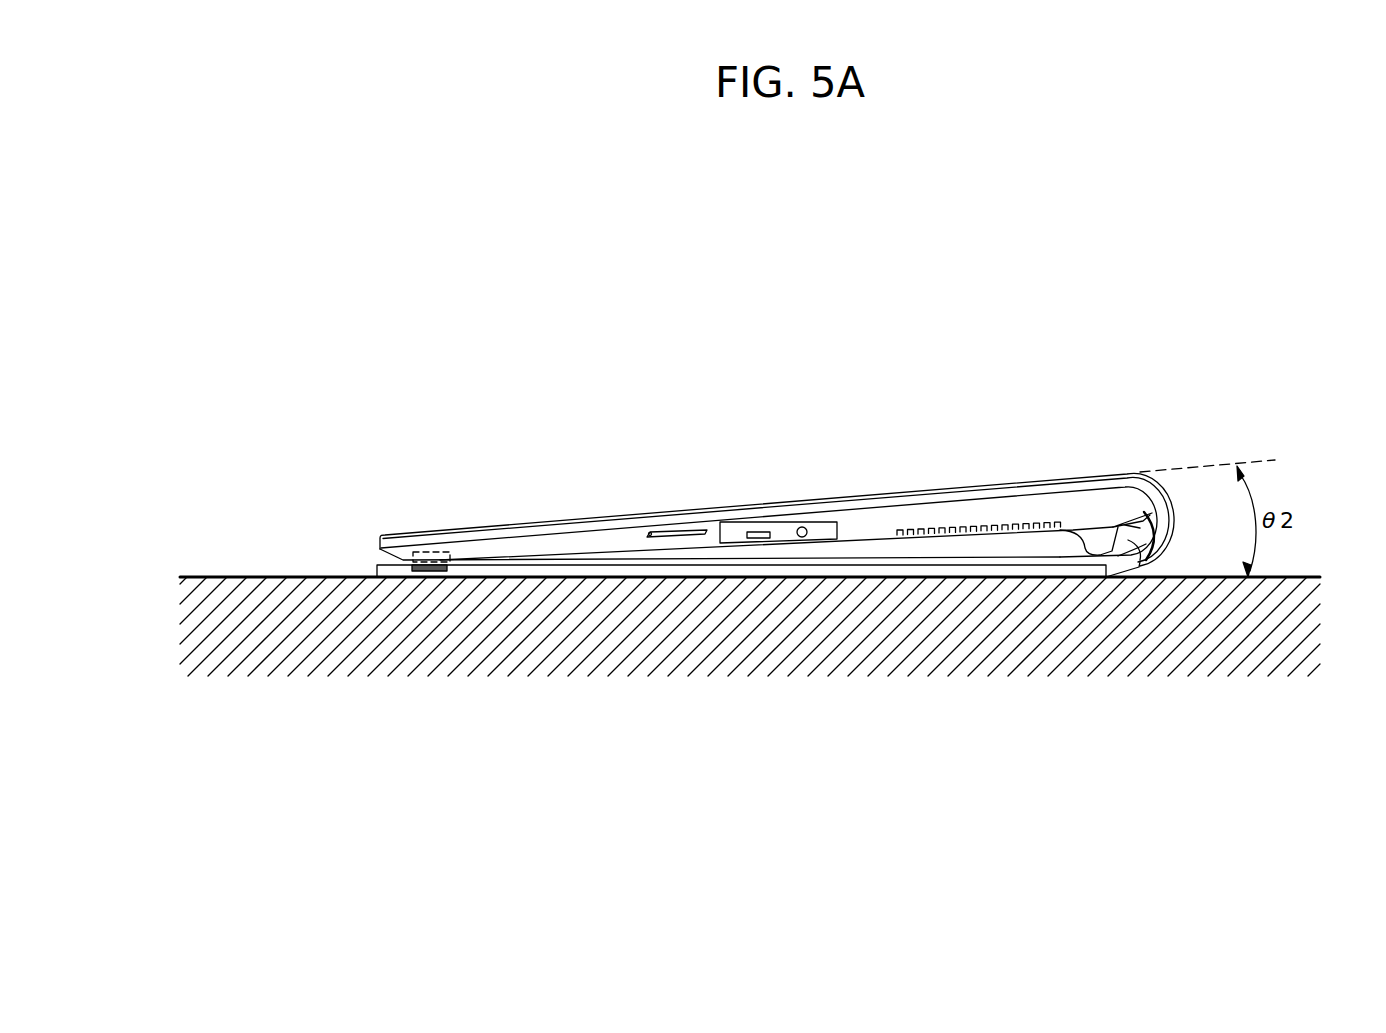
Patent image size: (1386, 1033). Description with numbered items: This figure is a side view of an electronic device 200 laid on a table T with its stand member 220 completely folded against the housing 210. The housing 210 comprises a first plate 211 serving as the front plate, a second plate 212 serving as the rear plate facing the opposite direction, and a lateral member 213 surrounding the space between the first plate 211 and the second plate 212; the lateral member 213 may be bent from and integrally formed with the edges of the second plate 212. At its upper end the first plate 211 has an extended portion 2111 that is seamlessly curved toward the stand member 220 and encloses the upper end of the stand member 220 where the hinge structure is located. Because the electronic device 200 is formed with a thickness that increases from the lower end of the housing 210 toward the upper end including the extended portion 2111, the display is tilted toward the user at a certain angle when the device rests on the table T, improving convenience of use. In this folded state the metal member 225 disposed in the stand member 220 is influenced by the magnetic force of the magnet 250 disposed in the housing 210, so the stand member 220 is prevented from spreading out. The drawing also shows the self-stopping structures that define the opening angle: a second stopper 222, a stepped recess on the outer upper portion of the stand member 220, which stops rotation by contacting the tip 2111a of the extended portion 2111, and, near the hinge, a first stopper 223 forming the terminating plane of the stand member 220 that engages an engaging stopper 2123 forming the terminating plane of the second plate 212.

The electronic device 200 is at (819, 543).
The housing 210 is at (864, 491).
The first plate 211 is at (987, 488).
The second plate 212 is at (878, 538).
The lateral member 213 is at (1033, 510).
The stand member 220 is at (661, 582).
The second stopper 222 is at (1110, 576).
The first stopper 223 is at (1180, 555).
The metal member 225 is at (432, 572).
The magnet 250 is at (432, 552).
The extended portion 2111 is at (1172, 525).
The tip 2111a is at (1135, 565).
The engaging stopper 2123 is at (1165, 528).
The table T is at (239, 577).